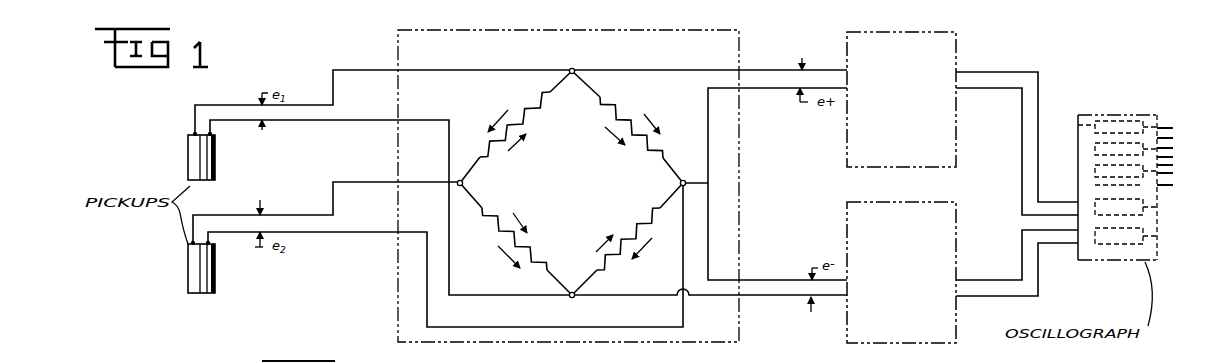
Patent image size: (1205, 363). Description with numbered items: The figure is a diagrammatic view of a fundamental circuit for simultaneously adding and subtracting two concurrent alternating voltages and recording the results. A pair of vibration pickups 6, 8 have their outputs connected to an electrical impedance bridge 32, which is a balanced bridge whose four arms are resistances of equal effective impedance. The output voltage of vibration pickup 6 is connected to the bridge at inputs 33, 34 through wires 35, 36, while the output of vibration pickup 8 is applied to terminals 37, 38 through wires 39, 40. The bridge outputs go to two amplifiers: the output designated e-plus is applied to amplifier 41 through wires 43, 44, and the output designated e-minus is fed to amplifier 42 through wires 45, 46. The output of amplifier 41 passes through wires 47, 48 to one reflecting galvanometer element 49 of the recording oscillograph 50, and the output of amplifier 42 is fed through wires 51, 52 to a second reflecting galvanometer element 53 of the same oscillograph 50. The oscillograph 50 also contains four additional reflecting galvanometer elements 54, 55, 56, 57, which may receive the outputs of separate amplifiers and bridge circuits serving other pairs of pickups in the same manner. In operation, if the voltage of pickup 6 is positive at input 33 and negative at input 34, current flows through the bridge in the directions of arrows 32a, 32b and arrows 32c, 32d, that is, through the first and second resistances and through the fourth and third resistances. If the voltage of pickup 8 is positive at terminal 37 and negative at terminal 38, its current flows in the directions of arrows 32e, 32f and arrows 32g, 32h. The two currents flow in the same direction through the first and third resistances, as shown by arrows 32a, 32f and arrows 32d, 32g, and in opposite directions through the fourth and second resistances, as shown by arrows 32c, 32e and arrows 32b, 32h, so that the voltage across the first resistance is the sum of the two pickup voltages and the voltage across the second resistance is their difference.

The vibration pickup 6 is at (188, 160).
The vibration pickup 8 is at (188, 268).
The electrical impedance bridge 32 is at (571, 183).
The arrow 32a is at (660, 119).
The arrow 32b is at (645, 257).
The arrow 32c is at (490, 114).
The arrow 32d is at (496, 260).
The arrow 32e is at (513, 154).
The arrow 32f is at (602, 136).
The arrow 32g is at (531, 221).
The arrow 32h is at (593, 238).
The bridge input 33 is at (578, 67).
The bridge input 34 is at (575, 298).
The wire 35 is at (450, 72).
The wire 36 is at (405, 121).
The terminal 37 is at (465, 184).
The terminal 38 is at (686, 180).
The wire 39 is at (350, 183).
The wire 40 is at (343, 233).
The amplifier 41 is at (847, 48).
The amplifier 42 is at (847, 342).
The wire 43 is at (758, 70).
The wire 44 is at (752, 88).
The wire 45 is at (752, 280).
The wire 46 is at (750, 297).
The wire 47 is at (1003, 72).
The wire 48 is at (975, 88).
The reflecting galvanometer element 49 is at (1160, 209).
The recording oscillograph 50 is at (1135, 115).
The wire 51 is at (975, 280).
The wire 52 is at (970, 297).
The reflecting galvanometer element 53 is at (1160, 240).
The reflecting galvanometer element 54 is at (1095, 188).
The reflecting galvanometer element 55 is at (1095, 170).
The reflecting galvanometer element 56 is at (1095, 148).
The reflecting galvanometer element 57 is at (1100, 119).